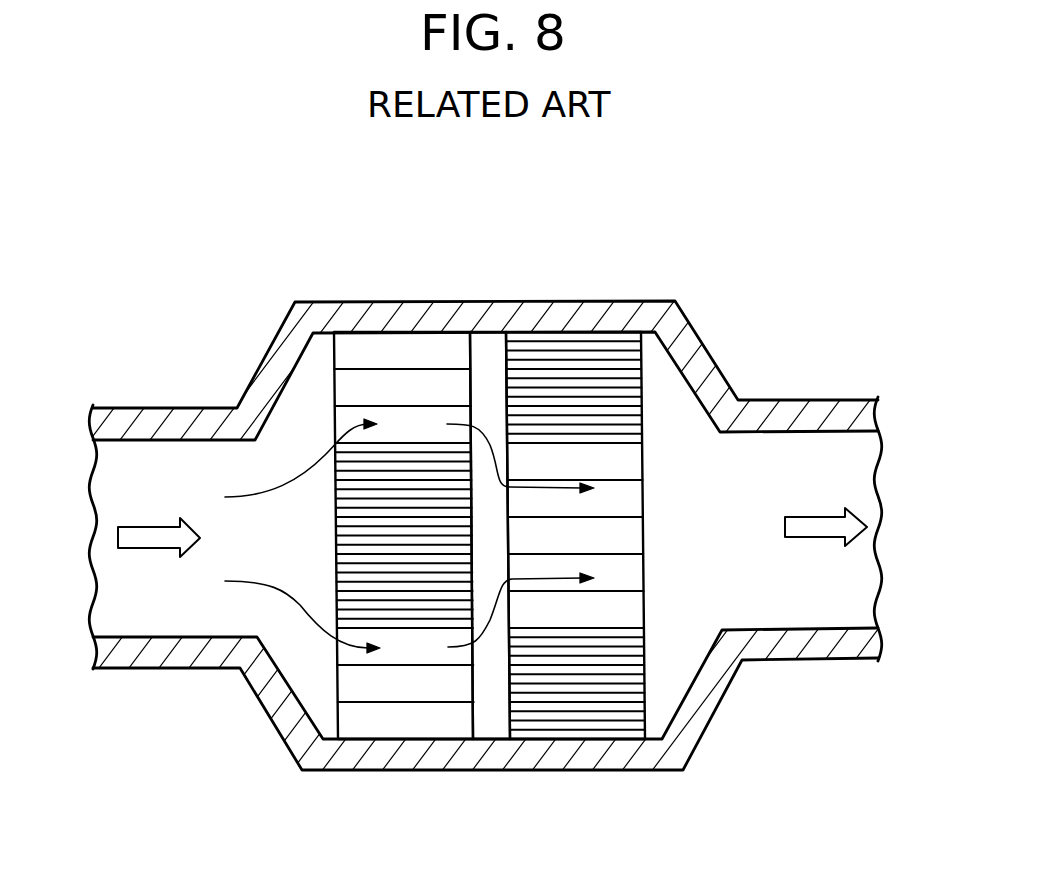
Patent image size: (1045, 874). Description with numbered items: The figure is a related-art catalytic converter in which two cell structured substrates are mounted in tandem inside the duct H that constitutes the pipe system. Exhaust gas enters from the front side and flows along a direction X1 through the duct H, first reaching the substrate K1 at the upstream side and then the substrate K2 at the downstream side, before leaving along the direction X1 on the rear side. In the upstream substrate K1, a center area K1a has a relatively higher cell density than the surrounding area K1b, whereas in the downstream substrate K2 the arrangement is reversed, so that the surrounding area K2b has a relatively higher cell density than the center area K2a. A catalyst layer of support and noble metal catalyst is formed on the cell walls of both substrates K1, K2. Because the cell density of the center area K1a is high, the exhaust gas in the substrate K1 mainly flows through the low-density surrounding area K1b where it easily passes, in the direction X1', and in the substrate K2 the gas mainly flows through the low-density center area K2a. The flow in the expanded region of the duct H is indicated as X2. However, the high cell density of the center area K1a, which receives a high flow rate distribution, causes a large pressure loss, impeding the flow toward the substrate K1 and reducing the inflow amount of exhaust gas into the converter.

The upstream-side substrate K1 is at (411, 558).
The center area of substrate K1 K1a is at (439, 613).
The surrounding area of substrate K1 K1b is at (407, 358).
The downstream-side substrate K2 is at (596, 558).
The center area of substrate K2 K2a is at (615, 610).
The surrounding area of substrate K2 K2b is at (584, 368).
The duct H is at (493, 317).
The exhaust gas flow direction X1 is at (490, 537).
The exhaust gas flow direction in surrounding area X1' is at (479, 537).
The exhaust gas flow in expanded chamber X2 is at (296, 536).